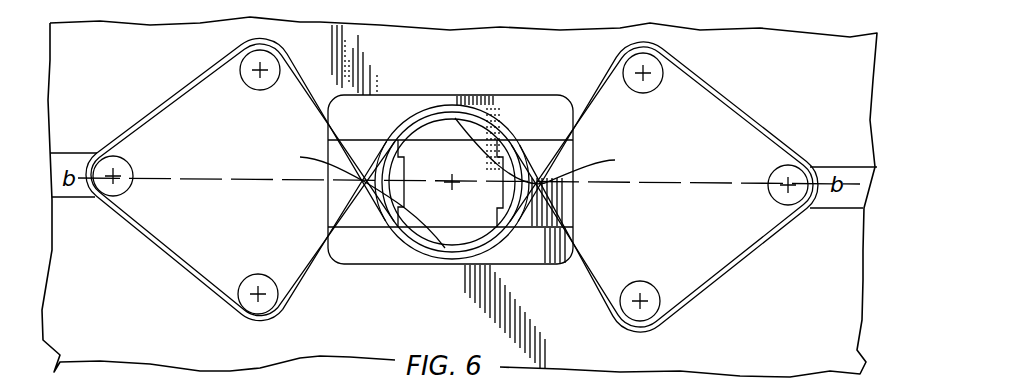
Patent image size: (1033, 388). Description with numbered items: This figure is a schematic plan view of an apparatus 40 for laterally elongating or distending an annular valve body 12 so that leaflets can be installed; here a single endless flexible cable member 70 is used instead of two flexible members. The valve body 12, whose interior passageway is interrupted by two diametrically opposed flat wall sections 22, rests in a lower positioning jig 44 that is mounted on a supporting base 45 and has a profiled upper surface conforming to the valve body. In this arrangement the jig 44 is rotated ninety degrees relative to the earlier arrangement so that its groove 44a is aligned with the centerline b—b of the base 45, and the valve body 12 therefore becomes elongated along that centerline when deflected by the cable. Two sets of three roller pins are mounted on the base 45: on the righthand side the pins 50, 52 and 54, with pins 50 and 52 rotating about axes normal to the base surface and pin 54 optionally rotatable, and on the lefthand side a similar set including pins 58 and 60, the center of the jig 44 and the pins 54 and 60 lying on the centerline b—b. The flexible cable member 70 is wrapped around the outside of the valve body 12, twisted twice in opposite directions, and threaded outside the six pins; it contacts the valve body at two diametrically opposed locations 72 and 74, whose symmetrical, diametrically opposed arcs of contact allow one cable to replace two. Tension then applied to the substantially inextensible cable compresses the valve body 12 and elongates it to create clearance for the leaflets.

The apparatus 40 is at (188, 176).
The valve body 12 is at (496, 117).
The flat wall sections 22 is at (404, 168).
The positioning jig 44 is at (392, 93).
The groove 44a is at (337, 198).
The supporting base 45 is at (498, 67).
The roller pin 50 is at (645, 280).
The roller pin 52 is at (648, 95).
The roller pin 54 is at (770, 172).
The roller pin 58 is at (251, 90).
The roller pin 60 is at (130, 165).
The flexible cable member 70 is at (205, 290).
The contact location 72 is at (550, 151).
The contact location 74 is at (356, 193).